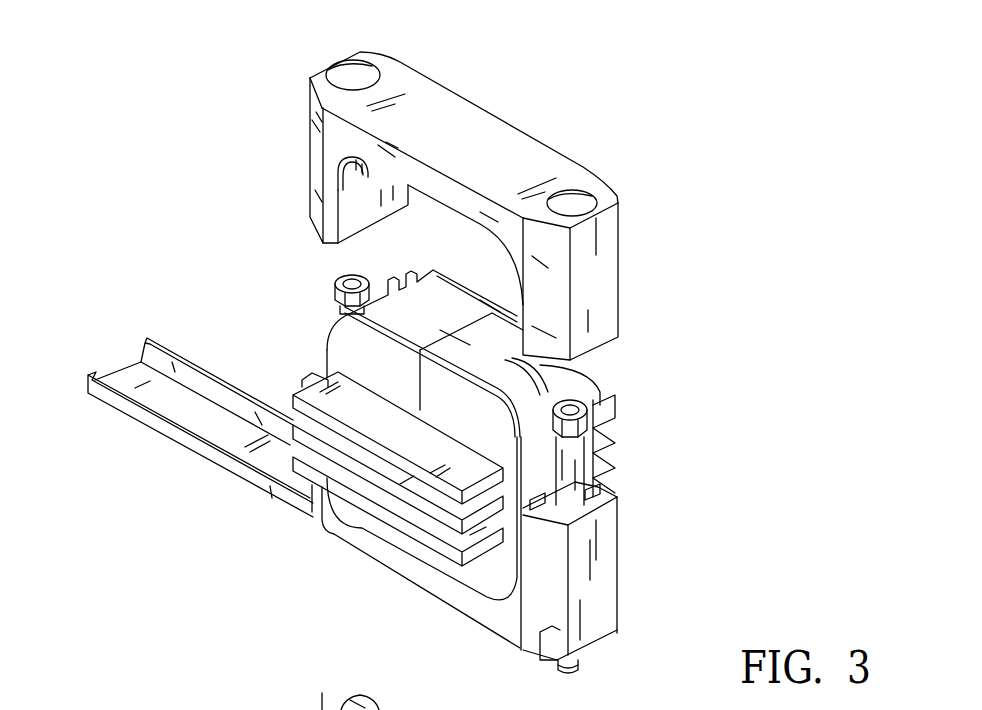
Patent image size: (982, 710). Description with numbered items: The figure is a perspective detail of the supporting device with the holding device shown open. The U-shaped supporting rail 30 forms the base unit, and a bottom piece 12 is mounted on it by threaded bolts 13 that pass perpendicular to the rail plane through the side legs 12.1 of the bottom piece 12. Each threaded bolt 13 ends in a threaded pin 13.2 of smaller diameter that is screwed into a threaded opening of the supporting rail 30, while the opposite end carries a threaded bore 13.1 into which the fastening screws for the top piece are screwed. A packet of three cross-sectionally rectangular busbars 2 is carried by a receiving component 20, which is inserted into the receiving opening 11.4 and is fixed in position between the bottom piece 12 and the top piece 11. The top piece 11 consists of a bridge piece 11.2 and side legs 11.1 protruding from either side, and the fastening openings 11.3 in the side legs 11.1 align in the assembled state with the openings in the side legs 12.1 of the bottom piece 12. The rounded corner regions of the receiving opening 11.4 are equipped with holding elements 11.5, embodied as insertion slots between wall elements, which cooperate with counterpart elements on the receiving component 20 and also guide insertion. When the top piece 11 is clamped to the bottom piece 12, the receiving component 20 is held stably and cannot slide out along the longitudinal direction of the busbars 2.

The busbars 2 is at (293, 396).
The top piece 11 is at (620, 217).
The side legs 11.1 is at (620, 293).
The bridge piece 11.2 is at (513, 122).
The fastening openings 11.3 is at (347, 75).
The receiving opening 11.4 is at (377, 230).
The holding elements 11.5 is at (340, 187).
The bottom piece 12 is at (617, 557).
The side legs 12.1 is at (597, 522).
The threaded bolts 13 is at (570, 465).
The threaded bore 13.1 is at (337, 283).
The threaded pins 13.2 is at (578, 663).
The receiving component 20 is at (600, 378).
The supporting rail 30 is at (198, 458).